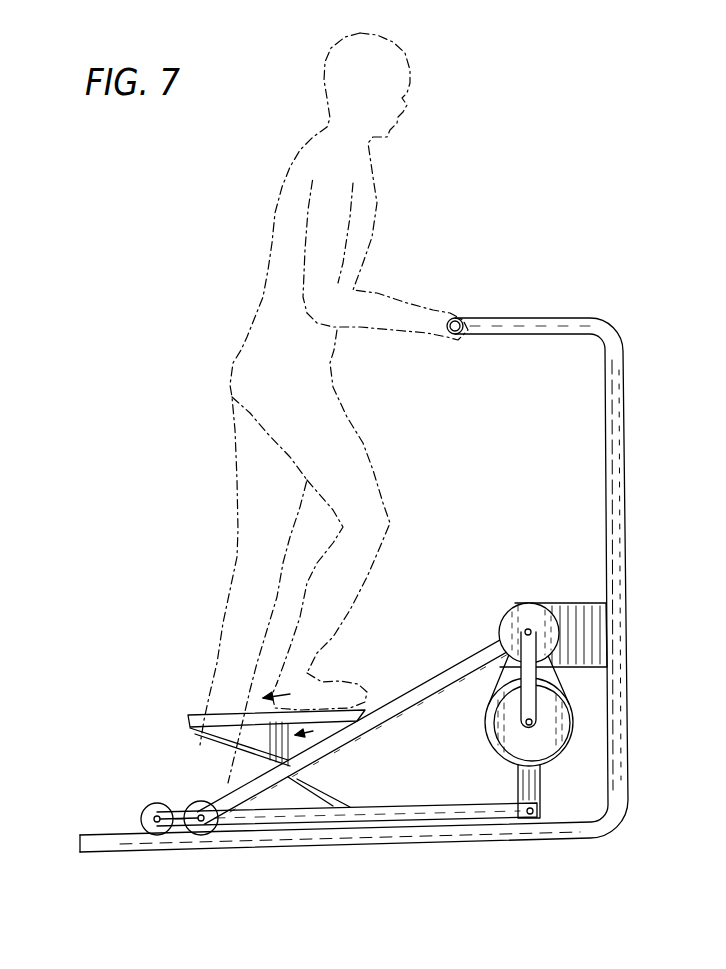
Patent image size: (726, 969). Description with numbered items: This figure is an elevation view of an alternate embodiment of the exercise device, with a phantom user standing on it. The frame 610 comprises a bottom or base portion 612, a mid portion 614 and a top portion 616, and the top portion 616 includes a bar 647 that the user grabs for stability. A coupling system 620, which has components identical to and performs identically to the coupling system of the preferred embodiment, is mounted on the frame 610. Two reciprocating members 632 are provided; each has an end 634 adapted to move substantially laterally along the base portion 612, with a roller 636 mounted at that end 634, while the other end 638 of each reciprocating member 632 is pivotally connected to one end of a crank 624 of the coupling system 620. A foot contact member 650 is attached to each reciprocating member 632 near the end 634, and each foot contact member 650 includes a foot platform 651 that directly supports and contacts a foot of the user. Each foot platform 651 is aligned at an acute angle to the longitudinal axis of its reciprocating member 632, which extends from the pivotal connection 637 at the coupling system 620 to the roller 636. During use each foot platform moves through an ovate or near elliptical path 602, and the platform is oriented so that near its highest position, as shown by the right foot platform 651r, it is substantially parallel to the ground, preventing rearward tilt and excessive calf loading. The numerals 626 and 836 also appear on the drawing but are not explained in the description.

The frame 610 is at (627, 463).
The base portion 612 is at (472, 842).
The mid portion 614 is at (623, 390).
The top portion 616 is at (553, 318).
The bar 647 is at (452, 318).
The ovate or near elliptical path 602 is at (258, 708).
The foot contact member 650 is at (203, 714).
The foot platform 651 is at (197, 740).
The right foot platform 651r is at (353, 713).
The reciprocating member 632 is at (263, 818).
The end 634 is at (175, 832).
The roller 636 is at (145, 810).
The coupling system 620 is at (573, 713).
The crank 624 is at (536, 660).
The crank pin 626 is at (540, 722).
The pivotal connection 637 is at (537, 623).
The other end 638 is at (515, 603).
The frame cross member 836 is at (725, 802).